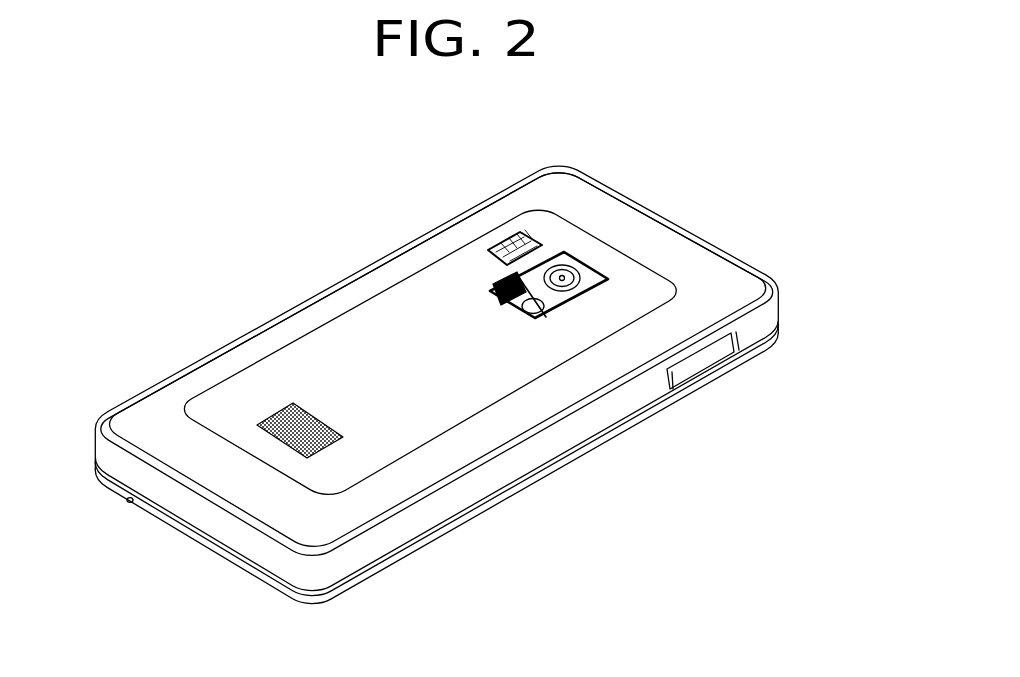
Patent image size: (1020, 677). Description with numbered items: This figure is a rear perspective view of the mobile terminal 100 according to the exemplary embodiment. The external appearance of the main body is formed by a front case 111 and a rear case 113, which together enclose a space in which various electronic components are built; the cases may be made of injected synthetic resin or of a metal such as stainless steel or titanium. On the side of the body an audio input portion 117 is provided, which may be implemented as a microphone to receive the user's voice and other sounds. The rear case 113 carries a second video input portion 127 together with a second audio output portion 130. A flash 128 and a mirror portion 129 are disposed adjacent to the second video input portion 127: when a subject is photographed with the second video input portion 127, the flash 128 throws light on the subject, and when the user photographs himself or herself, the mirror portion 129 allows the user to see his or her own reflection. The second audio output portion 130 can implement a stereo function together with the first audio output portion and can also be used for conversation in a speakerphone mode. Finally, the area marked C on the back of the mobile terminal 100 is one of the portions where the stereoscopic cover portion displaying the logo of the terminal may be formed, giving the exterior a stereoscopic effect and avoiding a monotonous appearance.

The mobile terminal 100 is at (239, 316).
The front case 111 is at (770, 317).
The rear case 113 is at (340, 302).
The audio input portion 117 is at (127, 503).
The portion C is at (278, 412).
The second video input portion 127 is at (562, 276).
The flash 128 is at (497, 283).
The mirror portion 129 is at (523, 306).
The second audio output portion 130 is at (503, 240).